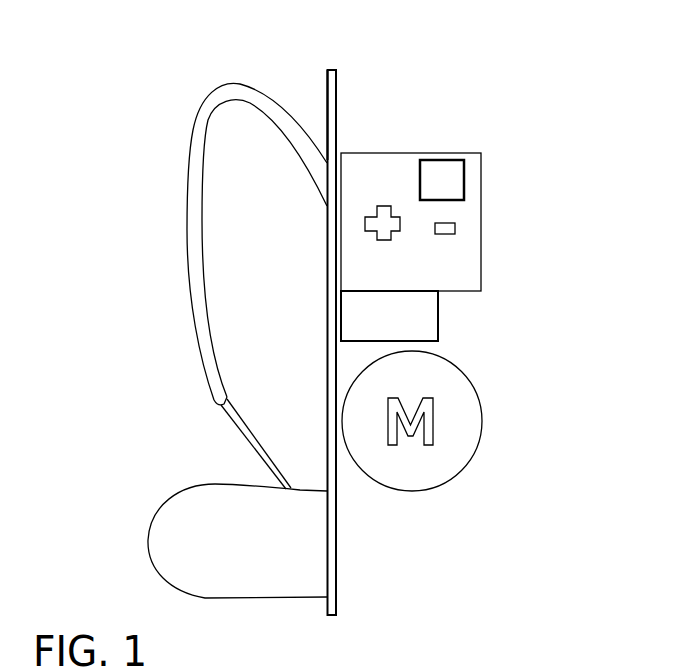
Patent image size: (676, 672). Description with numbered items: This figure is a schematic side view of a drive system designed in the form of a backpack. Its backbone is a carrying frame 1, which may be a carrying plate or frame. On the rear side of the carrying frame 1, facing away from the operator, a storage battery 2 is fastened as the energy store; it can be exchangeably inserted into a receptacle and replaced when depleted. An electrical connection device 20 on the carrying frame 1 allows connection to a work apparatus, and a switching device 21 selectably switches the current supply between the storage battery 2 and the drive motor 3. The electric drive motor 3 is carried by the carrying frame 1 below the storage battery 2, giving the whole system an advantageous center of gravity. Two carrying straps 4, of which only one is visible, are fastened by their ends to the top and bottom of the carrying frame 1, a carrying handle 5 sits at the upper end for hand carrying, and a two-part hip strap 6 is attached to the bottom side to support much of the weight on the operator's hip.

The carrying frame 1 is at (337, 110).
The storage battery 2 is at (481, 208).
The drive motor 3 is at (482, 430).
The carrying straps 4 is at (219, 82).
The carrying handle 5 is at (325, 78).
The hip strap 6 is at (163, 503).
The electrical connection device 20 is at (438, 317).
The switching device 21 is at (464, 172).